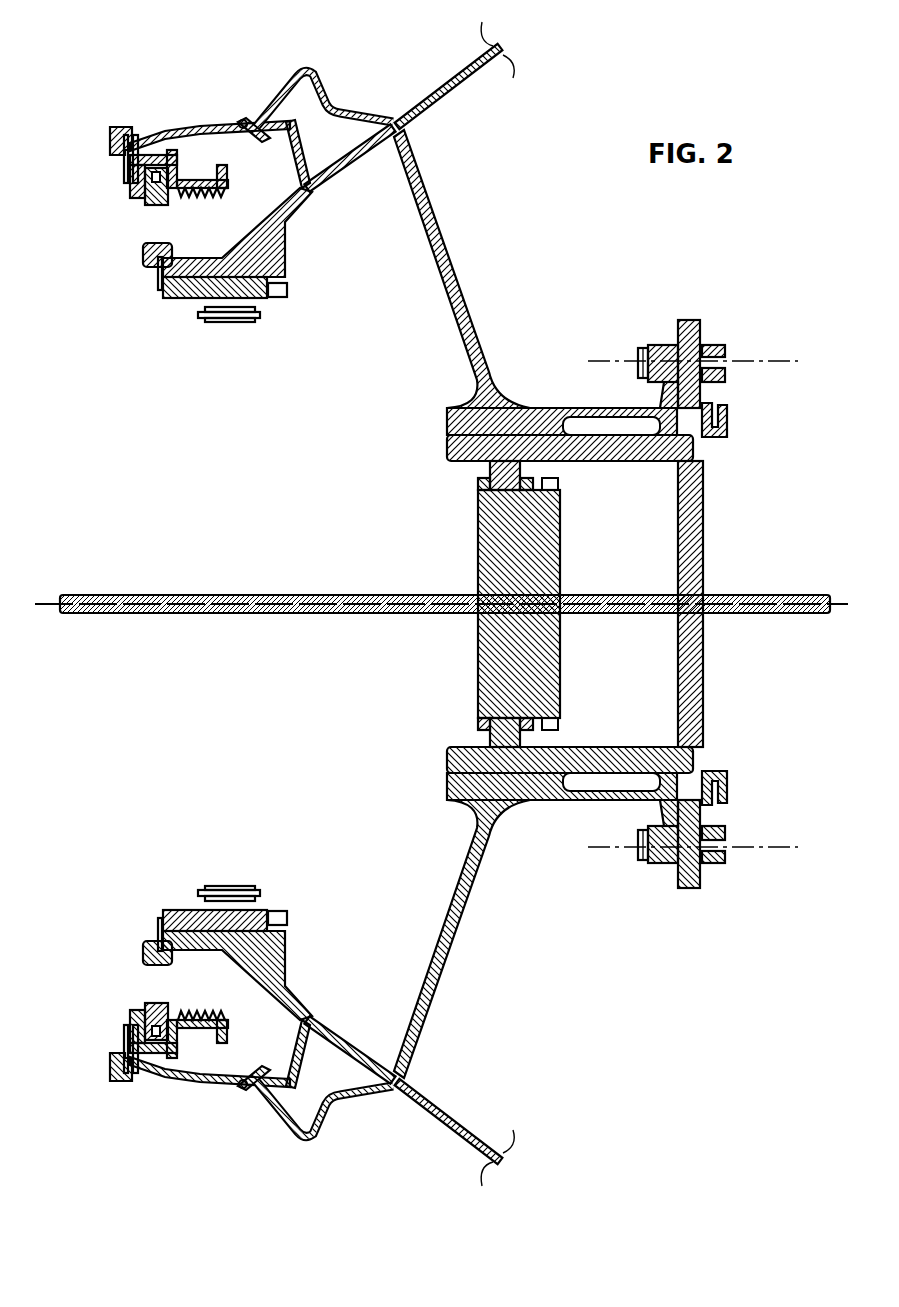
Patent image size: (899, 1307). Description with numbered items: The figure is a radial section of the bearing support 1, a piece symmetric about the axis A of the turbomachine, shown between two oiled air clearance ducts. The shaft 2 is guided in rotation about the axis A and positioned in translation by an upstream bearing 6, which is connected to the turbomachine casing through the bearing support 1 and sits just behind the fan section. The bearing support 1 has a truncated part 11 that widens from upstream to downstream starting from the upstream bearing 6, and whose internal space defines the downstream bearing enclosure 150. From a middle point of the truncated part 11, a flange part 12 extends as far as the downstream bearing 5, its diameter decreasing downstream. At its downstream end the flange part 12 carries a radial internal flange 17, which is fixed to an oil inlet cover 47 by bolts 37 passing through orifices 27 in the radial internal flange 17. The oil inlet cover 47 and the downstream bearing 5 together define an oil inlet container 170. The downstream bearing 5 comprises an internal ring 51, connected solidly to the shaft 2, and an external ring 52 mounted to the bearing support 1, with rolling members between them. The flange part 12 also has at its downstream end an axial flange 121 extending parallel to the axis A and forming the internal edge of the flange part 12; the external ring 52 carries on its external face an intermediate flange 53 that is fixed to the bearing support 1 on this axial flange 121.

The bearing support 1 is at (198, 36).
The shaft 2 is at (313, 613).
The downstream bearing 5 is at (470, 641).
The upstream bearing 6 is at (133, 294).
The truncated part 11 is at (463, 68).
The flange part 12 is at (455, 272).
The radial internal flange 17 is at (678, 334).
The orifices 27 is at (700, 345).
The bolts 37 is at (737, 356).
The oil inlet cover 47 is at (700, 522).
The internal ring 51 is at (493, 552).
The external ring 52 is at (498, 467).
The intermediate flange 53 is at (450, 444).
The axial flange 121 is at (548, 406).
The downstream bearing enclosure 150 is at (396, 294).
The oil inlet container 170 is at (634, 572).
The axis A is at (768, 597).